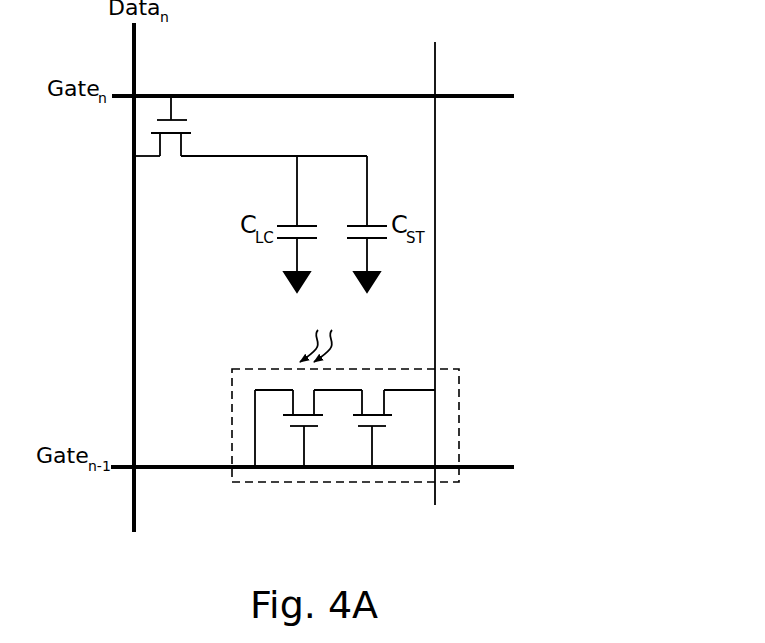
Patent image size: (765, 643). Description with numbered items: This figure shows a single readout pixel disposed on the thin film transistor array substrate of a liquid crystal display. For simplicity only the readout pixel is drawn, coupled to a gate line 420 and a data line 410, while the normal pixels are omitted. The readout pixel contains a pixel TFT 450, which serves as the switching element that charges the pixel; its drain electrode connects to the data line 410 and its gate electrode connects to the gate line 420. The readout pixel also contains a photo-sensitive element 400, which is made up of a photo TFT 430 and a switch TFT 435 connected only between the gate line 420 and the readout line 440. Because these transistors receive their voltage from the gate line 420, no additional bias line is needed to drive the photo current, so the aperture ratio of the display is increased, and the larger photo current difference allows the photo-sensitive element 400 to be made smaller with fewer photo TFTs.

The photo-sensitive element 400 is at (470, 416).
The data line 410 is at (134, 360).
The gate line 420 is at (308, 95).
The photo TFT 430 is at (296, 445).
The switch TFT 435 is at (365, 445).
The readout line 440 is at (435, 136).
The pixel TFT 450 is at (205, 170).